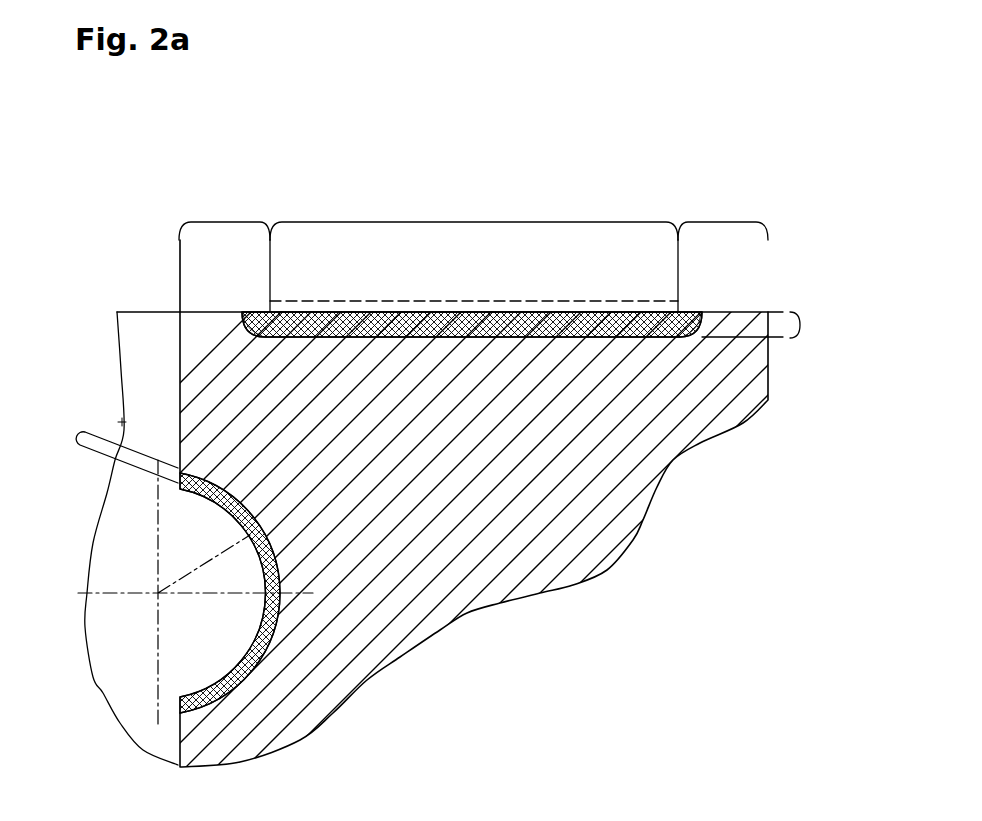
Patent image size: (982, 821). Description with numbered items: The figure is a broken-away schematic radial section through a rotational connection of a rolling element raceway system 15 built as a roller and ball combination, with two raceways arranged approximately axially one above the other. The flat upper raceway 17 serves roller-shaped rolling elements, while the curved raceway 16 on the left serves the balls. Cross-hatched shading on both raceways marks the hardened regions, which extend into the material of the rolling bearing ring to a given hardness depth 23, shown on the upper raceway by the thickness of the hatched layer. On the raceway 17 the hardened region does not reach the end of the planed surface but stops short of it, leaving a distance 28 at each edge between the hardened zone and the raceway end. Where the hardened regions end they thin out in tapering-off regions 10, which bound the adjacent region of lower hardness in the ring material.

The rolling element raceway system 15 is at (147, 259).
The distance 28 is at (227, 222).
The raceway 17 is at (475, 222).
The hardness depth 23 is at (801, 325).
The tapering-off regions 10 is at (265, 340).
The raceway 16 is at (207, 612).